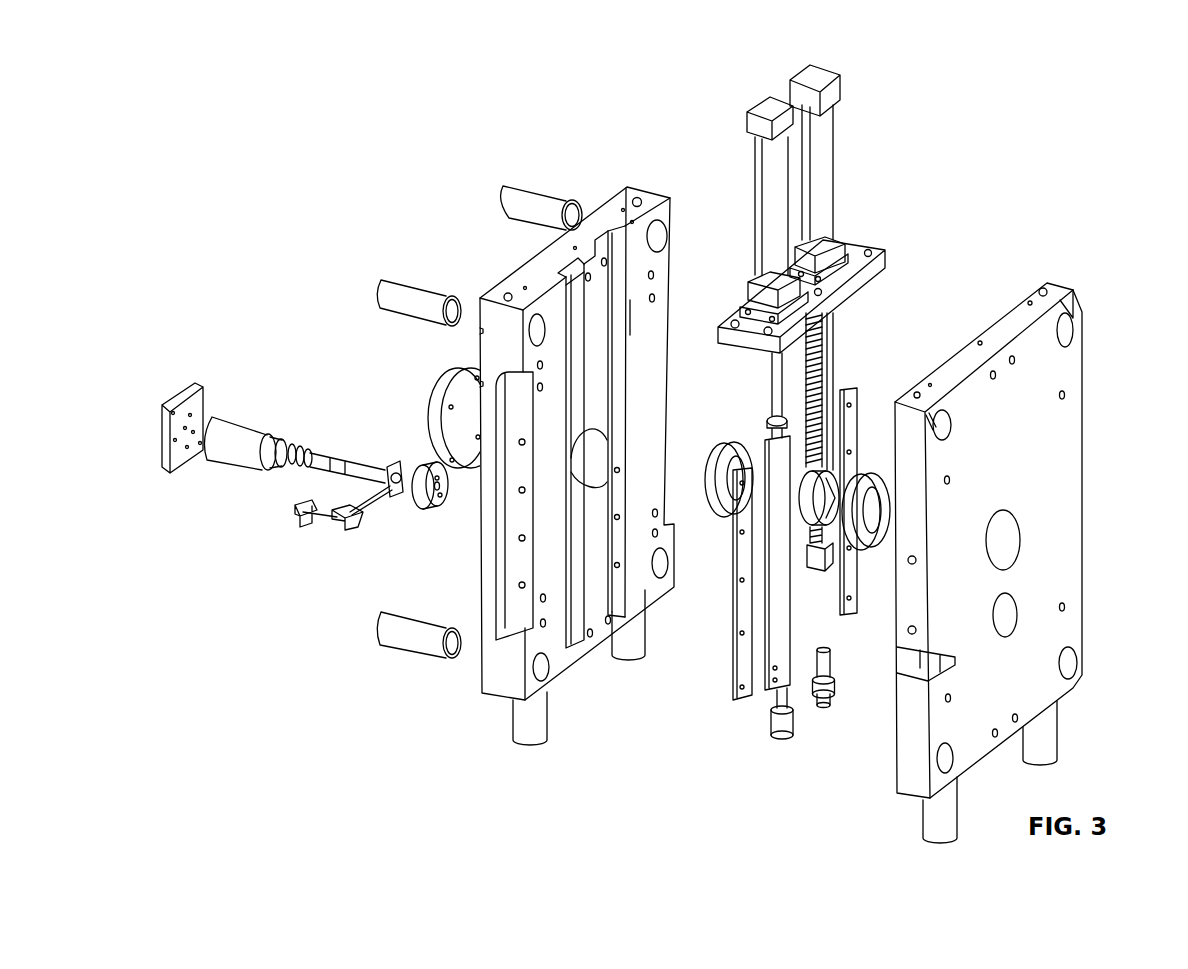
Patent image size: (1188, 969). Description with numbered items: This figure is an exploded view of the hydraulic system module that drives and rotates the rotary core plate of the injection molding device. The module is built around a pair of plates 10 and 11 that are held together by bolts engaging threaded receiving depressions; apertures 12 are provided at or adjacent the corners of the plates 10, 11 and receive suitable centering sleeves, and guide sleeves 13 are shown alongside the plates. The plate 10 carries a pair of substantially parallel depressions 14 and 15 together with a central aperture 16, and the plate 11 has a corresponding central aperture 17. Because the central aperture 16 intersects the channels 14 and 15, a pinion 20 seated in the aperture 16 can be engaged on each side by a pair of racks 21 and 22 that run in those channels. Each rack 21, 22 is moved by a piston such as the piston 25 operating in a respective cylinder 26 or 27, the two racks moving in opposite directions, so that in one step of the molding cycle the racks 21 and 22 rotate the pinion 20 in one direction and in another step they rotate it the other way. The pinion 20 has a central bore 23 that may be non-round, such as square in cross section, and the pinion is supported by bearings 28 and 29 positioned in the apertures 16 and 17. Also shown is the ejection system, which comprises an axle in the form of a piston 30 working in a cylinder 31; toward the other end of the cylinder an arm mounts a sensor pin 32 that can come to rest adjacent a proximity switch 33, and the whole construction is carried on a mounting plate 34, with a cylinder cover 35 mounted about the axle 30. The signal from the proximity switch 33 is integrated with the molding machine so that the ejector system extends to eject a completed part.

The plate 10 is at (650, 201).
The plate 11 is at (1038, 365).
The aperture 12 is at (667, 237).
The guide pin 13 is at (527, 201).
The depression 14 is at (575, 273).
The depression 15 is at (643, 330).
The central aperture 16 is at (598, 462).
The central aperture 17 is at (1002, 547).
The pinion 20 is at (842, 385).
The rack 21 is at (828, 372).
The rack 22 is at (777, 643).
The central bore 23 is at (828, 498).
The piston 25 is at (777, 370).
The cylinder 26 is at (772, 200).
The cylinder 27 is at (815, 130).
The bearing 28 is at (712, 518).
The bearing 29 is at (884, 548).
The piston 30 is at (350, 470).
The cylinder 31 is at (240, 432).
The arm mounting sensor pin 32 is at (327, 518).
The proximity switch 33 is at (297, 513).
The mounting plate 34 is at (207, 390).
The cylinder cover 35 is at (427, 470).